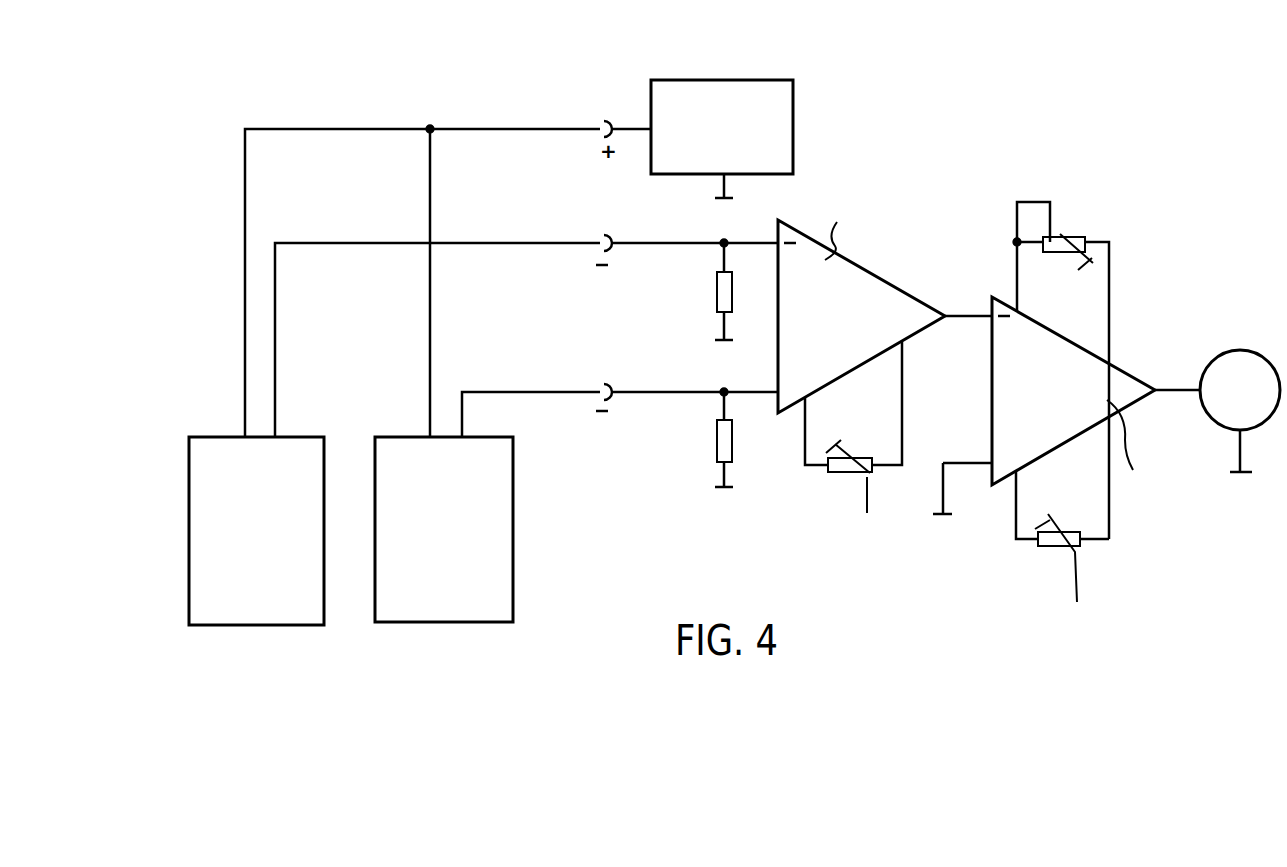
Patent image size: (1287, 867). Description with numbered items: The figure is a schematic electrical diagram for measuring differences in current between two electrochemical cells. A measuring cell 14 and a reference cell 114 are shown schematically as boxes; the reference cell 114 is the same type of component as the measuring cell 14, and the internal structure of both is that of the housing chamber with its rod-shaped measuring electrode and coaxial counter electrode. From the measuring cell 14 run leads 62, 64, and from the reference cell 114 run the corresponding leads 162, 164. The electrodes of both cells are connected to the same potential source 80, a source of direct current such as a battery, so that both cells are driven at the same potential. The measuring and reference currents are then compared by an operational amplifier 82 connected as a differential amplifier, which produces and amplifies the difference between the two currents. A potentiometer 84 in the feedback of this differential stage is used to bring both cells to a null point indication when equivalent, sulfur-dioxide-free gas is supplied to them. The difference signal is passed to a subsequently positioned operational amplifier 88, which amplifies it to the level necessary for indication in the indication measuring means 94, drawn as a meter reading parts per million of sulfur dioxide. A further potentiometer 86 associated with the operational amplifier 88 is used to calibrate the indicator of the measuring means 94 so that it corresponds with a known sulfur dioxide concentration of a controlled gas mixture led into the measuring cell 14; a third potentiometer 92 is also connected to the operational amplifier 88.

The measuring cell 14 is at (268, 610).
The reference cell 114 is at (477, 608).
The lead 62 is at (275, 411).
The lead 64 is at (246, 409).
The lead 162 is at (462, 417).
The lead 164 is at (429, 409).
The potential source 80 is at (793, 126).
The operational amplifier 82 is at (860, 295).
The potentiometer 84 is at (838, 467).
The potentiometer 86 is at (1078, 236).
The operational amplifier 88 is at (1000, 369).
The potentiometer 92 is at (1080, 585).
The indication measuring means 94 is at (1250, 366).